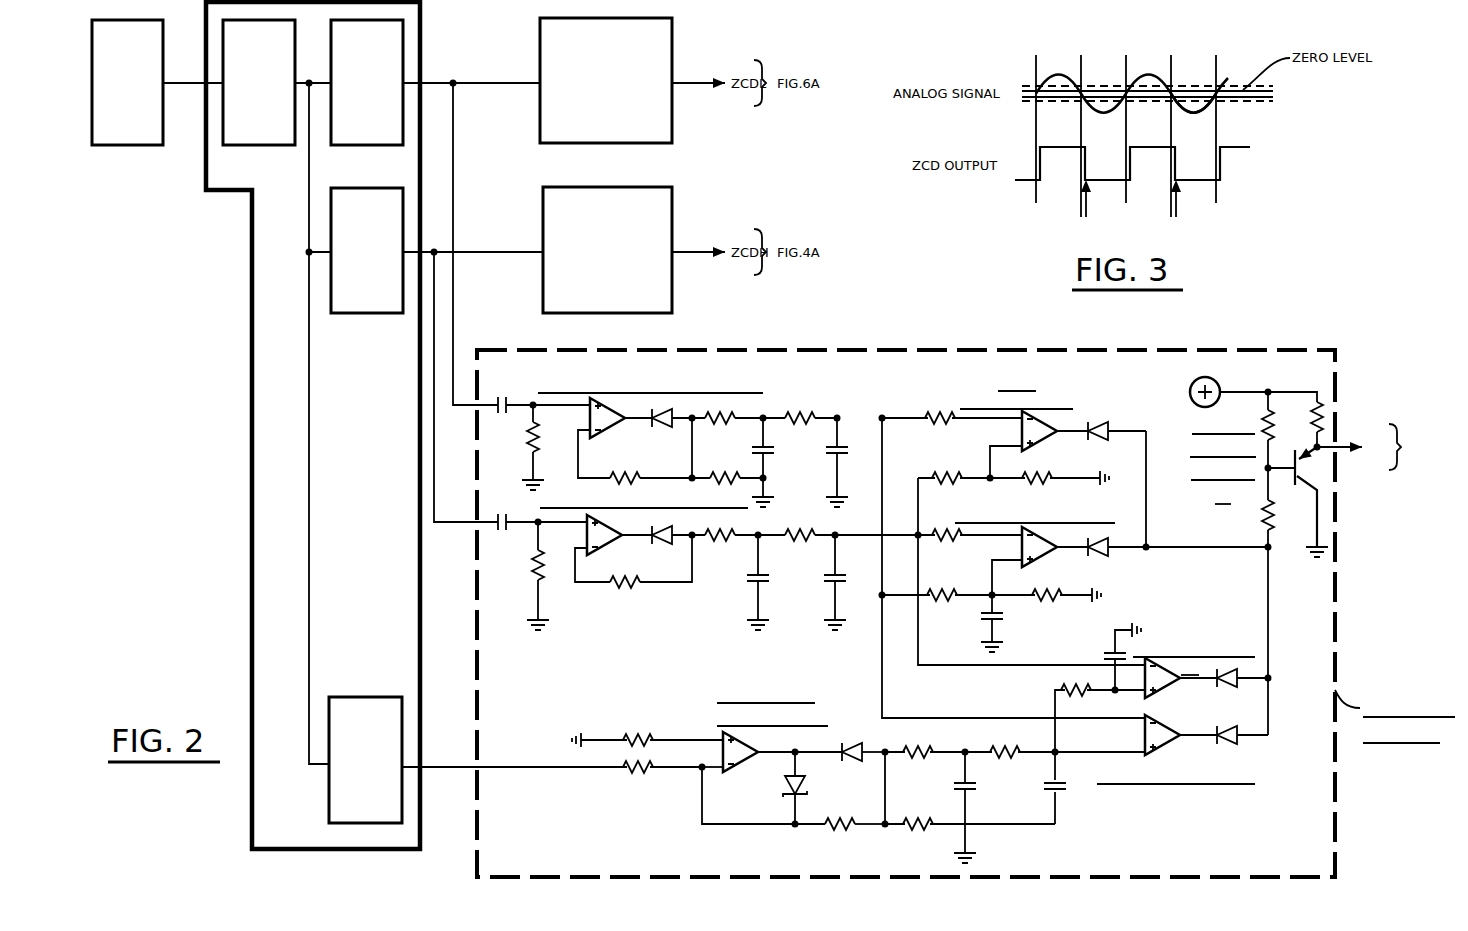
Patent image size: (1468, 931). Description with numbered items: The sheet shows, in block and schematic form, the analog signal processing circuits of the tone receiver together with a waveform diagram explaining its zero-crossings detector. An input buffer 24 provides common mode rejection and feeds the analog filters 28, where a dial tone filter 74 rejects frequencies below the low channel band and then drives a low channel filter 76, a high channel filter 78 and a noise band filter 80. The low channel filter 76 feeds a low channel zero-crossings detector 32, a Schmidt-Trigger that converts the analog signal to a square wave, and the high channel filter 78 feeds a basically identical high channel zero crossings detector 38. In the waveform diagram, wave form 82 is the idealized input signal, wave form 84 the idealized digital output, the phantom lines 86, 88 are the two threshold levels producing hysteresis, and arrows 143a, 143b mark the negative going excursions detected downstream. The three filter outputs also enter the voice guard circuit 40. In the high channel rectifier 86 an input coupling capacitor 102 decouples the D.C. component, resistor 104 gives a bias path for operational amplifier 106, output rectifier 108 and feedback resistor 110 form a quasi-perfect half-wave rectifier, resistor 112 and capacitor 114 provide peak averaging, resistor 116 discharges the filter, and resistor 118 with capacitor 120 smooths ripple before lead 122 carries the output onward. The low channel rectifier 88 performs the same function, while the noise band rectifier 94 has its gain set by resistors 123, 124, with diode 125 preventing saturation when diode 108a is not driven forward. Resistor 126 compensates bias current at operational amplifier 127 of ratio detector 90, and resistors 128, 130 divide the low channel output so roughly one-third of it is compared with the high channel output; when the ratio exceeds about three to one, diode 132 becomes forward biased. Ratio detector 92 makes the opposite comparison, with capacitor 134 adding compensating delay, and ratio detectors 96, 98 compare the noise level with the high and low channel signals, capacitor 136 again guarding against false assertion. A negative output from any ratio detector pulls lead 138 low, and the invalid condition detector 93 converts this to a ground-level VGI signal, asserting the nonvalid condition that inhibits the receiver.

In FIG. 2, the input buffer 24 is at (128, 146).
In FIG. 2, the analog filters 28 is at (252, 464).
In FIG. 2, the low channel zero-crossings detector circuit 32 is at (540, 43).
In FIG. 2, the high channel zero crossings detector 38 is at (543, 228).
In FIG. 2, the voice guard circuit 40 is at (1338, 612).
In FIG. 2, the dial tone filter 74 is at (257, 146).
In FIG. 2, the low channel filter 76 is at (404, 44).
In FIG. 2, the high channel filter 78 is at (378, 315).
In FIG. 2, the noise band filter 80 is at (357, 697).
In FIG. 3, the wave form 82 is at (1058, 72).
In FIG. 3, the wave form 84 is at (1137, 147).
In FIG. 2, the high channel rectifier 86 is at (664, 439).
In FIG. 3, the high channel rectifier 86 is at (1182, 78).
In FIG. 2, the low channel rectifier 88 is at (722, 560).
In FIG. 3, the low channel rectifier 88 is at (1043, 100).
In FIG. 2, the ratio detector 90 is at (1019, 461).
In FIG. 2, the ratio detector 92 is at (1016, 579).
In FIG. 2, the invalid condition detector 93 is at (1328, 467).
In FIG. 2, the noise band rectifier 94 is at (806, 774).
In FIG. 2, the ratio detector 96 is at (1162, 698).
In FIG. 2, the ratio detector 98 is at (1116, 769).
In FIG. 2, the input coupling capacitor 102 is at (524, 368).
In FIG. 2, the resistor 104 is at (533, 446).
In FIG. 2, the operational amplifier 106 is at (578, 440).
In FIG. 2, the output rectifier 108 is at (660, 428).
In FIG. 2, the diode 108a is at (858, 746).
In FIG. 2, the resistor 110 is at (625, 472).
In FIG. 2, the resistor 112 is at (728, 427).
In FIG. 2, the capacitor 114 is at (768, 451).
In FIG. 2, the resistor 116 is at (727, 472).
In FIG. 2, the resistor 118 is at (800, 412).
In FIG. 2, the capacitor 120 is at (830, 456).
In FIG. 2, the lead 122 is at (882, 488).
In FIG. 2, the resistor 123 is at (640, 771).
In FIG. 2, the resistor 124 is at (845, 836).
In FIG. 2, the diode 125 is at (808, 788).
In FIG. 2, the resistor 126 is at (938, 412).
In FIG. 2, the operational amplifier 127 is at (1022, 427).
In FIG. 2, the resistor 128 is at (945, 471).
In FIG. 2, the resistor 130 is at (1040, 472).
In FIG. 2, the diode 132 is at (1100, 423).
In FIG. 2, the capacitor 134 is at (985, 616).
In FIG. 2, the capacitor 136 is at (1110, 655).
In FIG. 2, the lead 138 is at (1215, 549).
In FIG. 3, the arrow 143a is at (1088, 206).
In FIG. 3, the arrow 143b is at (1178, 205).